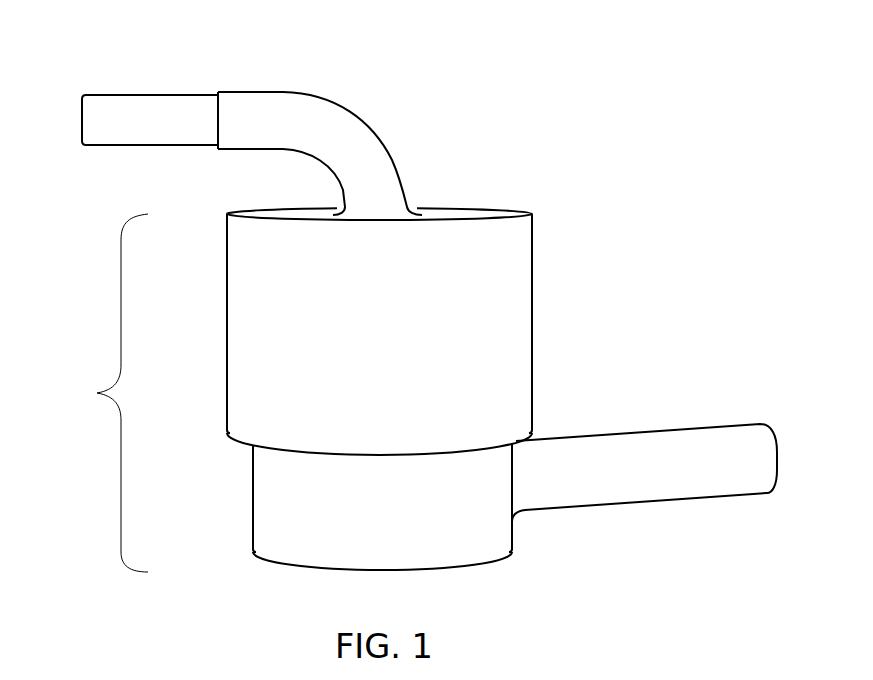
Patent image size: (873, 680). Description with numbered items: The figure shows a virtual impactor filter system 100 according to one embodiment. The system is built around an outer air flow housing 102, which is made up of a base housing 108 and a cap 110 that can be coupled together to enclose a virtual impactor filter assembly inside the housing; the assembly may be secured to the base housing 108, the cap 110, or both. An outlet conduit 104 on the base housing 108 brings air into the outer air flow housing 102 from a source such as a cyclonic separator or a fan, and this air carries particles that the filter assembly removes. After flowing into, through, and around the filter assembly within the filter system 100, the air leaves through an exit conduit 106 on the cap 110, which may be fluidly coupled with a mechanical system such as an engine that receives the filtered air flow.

The virtual impactor filter system 100 is at (445, 62).
The outer air flow housing 102 is at (97, 393).
The outlet conduit 104 is at (137, 138).
The exit conduit 106 is at (657, 486).
The base housing 108 is at (520, 311).
The cap 110 is at (264, 505).